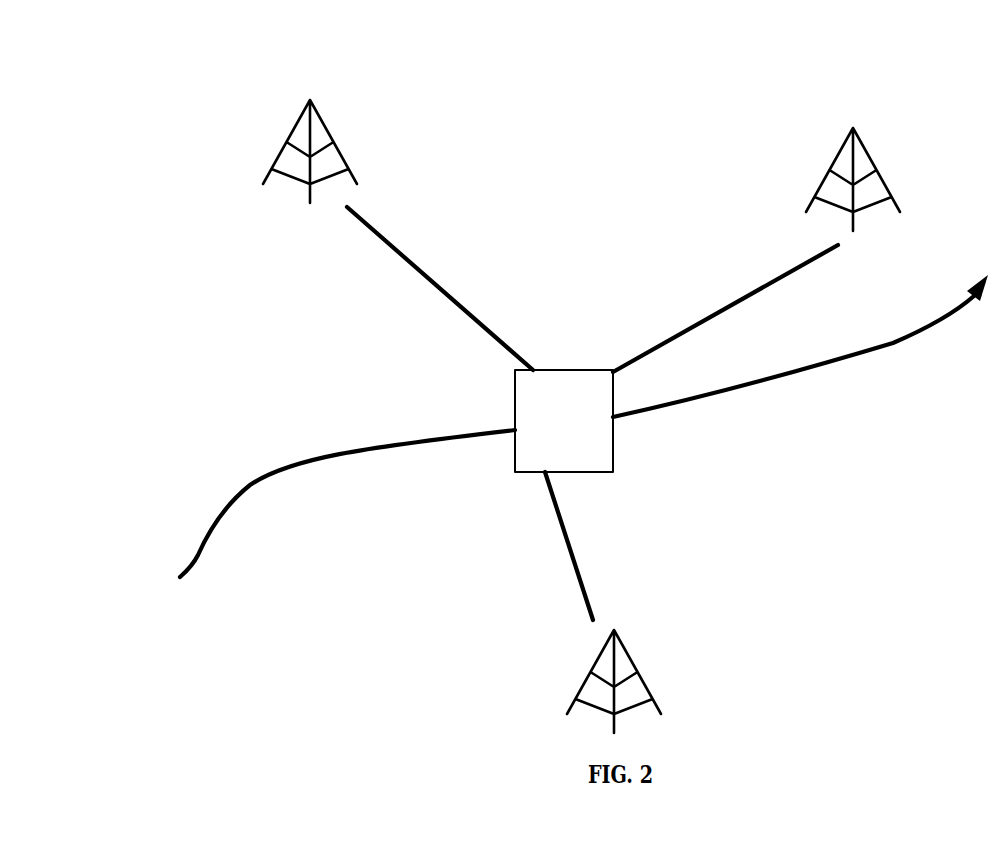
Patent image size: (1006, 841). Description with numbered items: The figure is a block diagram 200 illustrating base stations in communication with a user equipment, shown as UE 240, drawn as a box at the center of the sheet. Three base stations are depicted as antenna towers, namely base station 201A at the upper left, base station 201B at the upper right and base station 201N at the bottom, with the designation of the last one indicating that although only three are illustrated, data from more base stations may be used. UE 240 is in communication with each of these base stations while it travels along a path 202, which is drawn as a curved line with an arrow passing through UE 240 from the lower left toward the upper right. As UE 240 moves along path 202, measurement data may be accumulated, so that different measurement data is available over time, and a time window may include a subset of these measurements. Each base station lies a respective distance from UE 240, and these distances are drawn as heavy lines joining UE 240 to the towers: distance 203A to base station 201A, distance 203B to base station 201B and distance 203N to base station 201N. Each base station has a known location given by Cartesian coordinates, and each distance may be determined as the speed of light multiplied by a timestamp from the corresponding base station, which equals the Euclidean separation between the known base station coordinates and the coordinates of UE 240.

The block diagram of base stations in communication with a user equipment 200 is at (576, 38).
The base station 201A is at (325, 121).
The base station 201B is at (867, 150).
The base station 201N is at (627, 653).
The path 202 is at (860, 363).
The distance 203A is at (454, 297).
The distance 203B is at (722, 305).
The distance 203N is at (577, 573).
The UE (user equipment) 240 is at (564, 421).